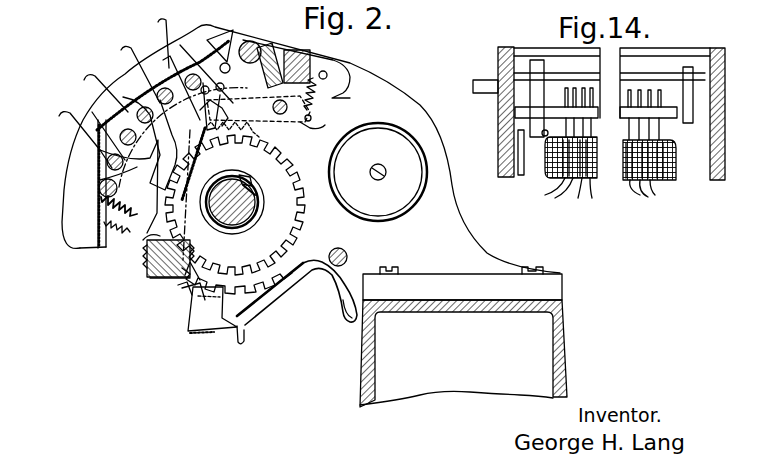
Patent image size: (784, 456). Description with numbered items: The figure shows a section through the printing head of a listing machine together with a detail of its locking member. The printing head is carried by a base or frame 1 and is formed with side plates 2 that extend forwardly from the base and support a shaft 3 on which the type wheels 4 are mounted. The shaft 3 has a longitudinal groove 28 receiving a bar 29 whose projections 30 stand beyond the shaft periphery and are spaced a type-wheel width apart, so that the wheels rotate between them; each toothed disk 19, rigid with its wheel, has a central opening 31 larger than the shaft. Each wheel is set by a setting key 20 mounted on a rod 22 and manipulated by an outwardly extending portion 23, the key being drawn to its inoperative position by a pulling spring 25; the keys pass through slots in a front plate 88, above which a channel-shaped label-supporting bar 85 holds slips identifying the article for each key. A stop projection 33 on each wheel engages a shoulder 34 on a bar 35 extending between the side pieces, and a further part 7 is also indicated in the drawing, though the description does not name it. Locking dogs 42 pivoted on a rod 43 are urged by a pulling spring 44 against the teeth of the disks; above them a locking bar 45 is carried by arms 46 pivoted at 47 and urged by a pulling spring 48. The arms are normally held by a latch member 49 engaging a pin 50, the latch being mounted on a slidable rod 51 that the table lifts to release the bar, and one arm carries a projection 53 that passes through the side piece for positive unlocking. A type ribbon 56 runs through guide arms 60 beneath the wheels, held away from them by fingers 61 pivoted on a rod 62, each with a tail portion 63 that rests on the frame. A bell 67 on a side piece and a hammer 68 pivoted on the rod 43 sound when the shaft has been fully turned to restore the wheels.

In FIG. 2, the base or frame 1 is at (563, 319).
In FIG. 14, the base or frame 1 is at (716, 90).
In FIG. 2, the side plates 2 is at (354, 88).
In FIG. 2, the shaft 3 is at (233, 222).
In FIG. 14, the type wheels 4 is at (656, 194).
In FIG. 2, the lever 7 is at (143, 241).
In FIG. 2, the toothed disk 19 is at (183, 290).
In FIG. 14, the toothed disk 19 is at (610, 174).
In FIG. 2, the setting key 20 is at (100, 182).
In FIG. 2, the rod 22 is at (110, 133).
In FIG. 2, the outwardly extending portion 23 is at (159, 21).
In FIG. 2, the pulling spring 25 is at (100, 222).
In FIG. 2, the groove 28 is at (255, 192).
In FIG. 2, the bar 29 is at (251, 185).
In FIG. 2, the projections 30 is at (245, 176).
In FIG. 2, the central opening 31 is at (256, 214).
In FIG. 2, the stop projection 33 is at (183, 279).
In FIG. 2, the shoulder 34 is at (183, 285).
In FIG. 2, the bar 35 is at (147, 266).
In FIG. 2, the locking dogs 42 is at (312, 118).
In FIG. 2, the rod 43 is at (304, 77).
In FIG. 2, the pulling spring 44 is at (350, 98).
In FIG. 2, the locking bar 45 is at (172, 55).
In FIG. 14, the locking bar 45 is at (645, 110).
In FIG. 2, the arms 46 is at (218, 83).
In FIG. 14, the arms 46 is at (500, 102).
In FIG. 2, the pivot 47 is at (250, 41).
In FIG. 2, the pulling spring 48 is at (306, 126).
In FIG. 14, the pulling spring 48 is at (544, 137).
In FIG. 2, the latch member 49 is at (250, 96).
In FIG. 14, the latch member 49 is at (497, 127).
In FIG. 2, the pin or projection 50 is at (206, 86).
In FIG. 14, the pin or projection 50 is at (518, 117).
In FIG. 2, the rod 51 is at (185, 276).
In FIG. 14, the rod 51 is at (521, 144).
In FIG. 14, the projection 53 is at (487, 82).
In FIG. 2, the type ribbon 56 is at (198, 334).
In FIG. 2, the guide arms 60 is at (240, 320).
In FIG. 2, the fingers 61 is at (239, 341).
In FIG. 2, the rod 62 is at (347, 256).
In FIG. 2, the tail portion 63 is at (352, 290).
In FIG. 2, the bell 67 is at (428, 175).
In FIG. 2, the hammer 68 is at (310, 163).
In FIG. 2, the label-supporting bar 85 is at (124, 98).
In FIG. 2, the plate 88 is at (100, 207).